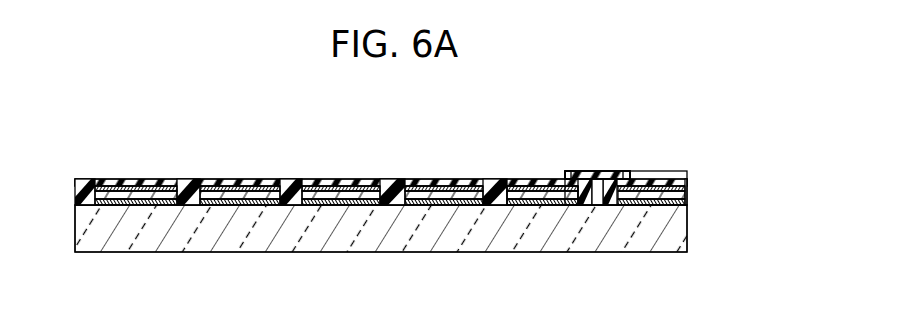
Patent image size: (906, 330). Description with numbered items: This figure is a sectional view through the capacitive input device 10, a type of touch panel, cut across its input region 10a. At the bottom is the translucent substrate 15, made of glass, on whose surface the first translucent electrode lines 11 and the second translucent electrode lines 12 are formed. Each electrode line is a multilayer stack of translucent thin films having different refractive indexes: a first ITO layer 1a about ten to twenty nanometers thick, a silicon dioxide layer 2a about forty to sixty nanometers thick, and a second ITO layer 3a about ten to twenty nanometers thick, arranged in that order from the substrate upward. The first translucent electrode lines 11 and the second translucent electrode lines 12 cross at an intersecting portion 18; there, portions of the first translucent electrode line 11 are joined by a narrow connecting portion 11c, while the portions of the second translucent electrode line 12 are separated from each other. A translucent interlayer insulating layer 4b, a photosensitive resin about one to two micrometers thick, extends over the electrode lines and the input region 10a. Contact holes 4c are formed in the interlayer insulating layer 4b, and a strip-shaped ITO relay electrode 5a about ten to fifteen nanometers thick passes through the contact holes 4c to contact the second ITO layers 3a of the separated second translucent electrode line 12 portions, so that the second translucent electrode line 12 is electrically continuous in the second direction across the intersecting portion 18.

The second translucent electrode line 12 is at (139, 174).
The first translucent electrode line 11 is at (241, 176).
The connecting portion 11c is at (597, 216).
The first ITO layer 1a is at (213, 207).
The silicon dioxide layer 2a is at (235, 200).
The second ITO layer 3a is at (268, 194).
The interlayer insulating layer 4b is at (560, 184).
The contact hole 4c is at (570, 184).
The relay electrode 5a is at (599, 172).
The intersecting portion 18 is at (590, 122).
The capacitive input device 10 is at (641, 140).
The input region 10a is at (626, 188).
The translucent substrate 15 is at (684, 233).